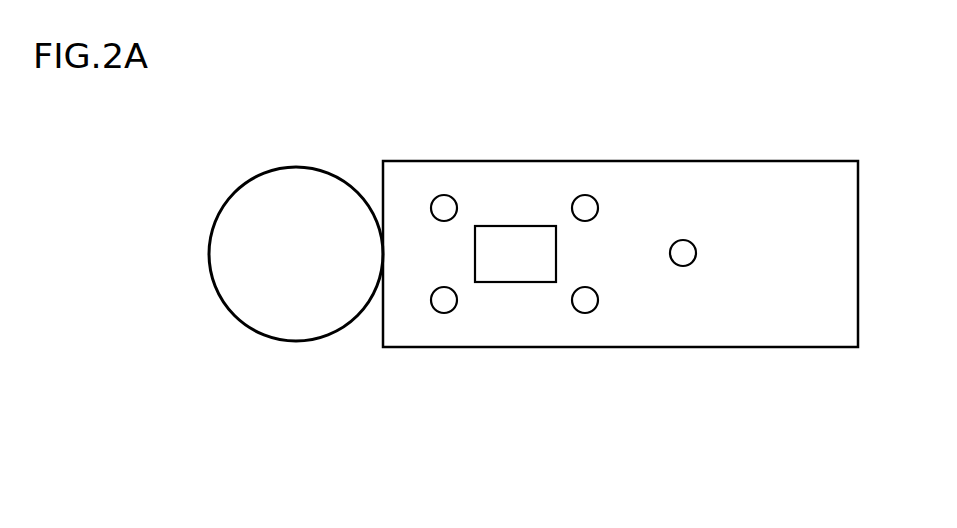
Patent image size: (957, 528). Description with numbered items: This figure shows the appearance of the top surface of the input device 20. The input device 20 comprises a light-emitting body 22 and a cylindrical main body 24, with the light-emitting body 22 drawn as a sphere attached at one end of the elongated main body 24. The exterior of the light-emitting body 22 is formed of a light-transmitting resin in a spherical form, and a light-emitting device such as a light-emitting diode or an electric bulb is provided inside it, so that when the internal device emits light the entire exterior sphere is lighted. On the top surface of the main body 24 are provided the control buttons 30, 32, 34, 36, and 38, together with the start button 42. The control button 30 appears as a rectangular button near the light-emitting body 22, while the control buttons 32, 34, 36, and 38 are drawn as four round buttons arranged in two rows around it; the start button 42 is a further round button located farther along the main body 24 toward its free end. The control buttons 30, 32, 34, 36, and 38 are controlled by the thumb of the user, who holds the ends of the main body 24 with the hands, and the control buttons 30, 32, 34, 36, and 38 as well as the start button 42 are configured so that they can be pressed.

The input device 20 is at (547, 522).
The light-emitting body 22 is at (297, 165).
The main body 24 is at (805, 172).
The control button 30 is at (513, 240).
The control button 32 is at (444, 208).
The control button 34 is at (585, 208).
The control button 36 is at (444, 300).
The control button 38 is at (585, 300).
The start button 42 is at (683, 253).